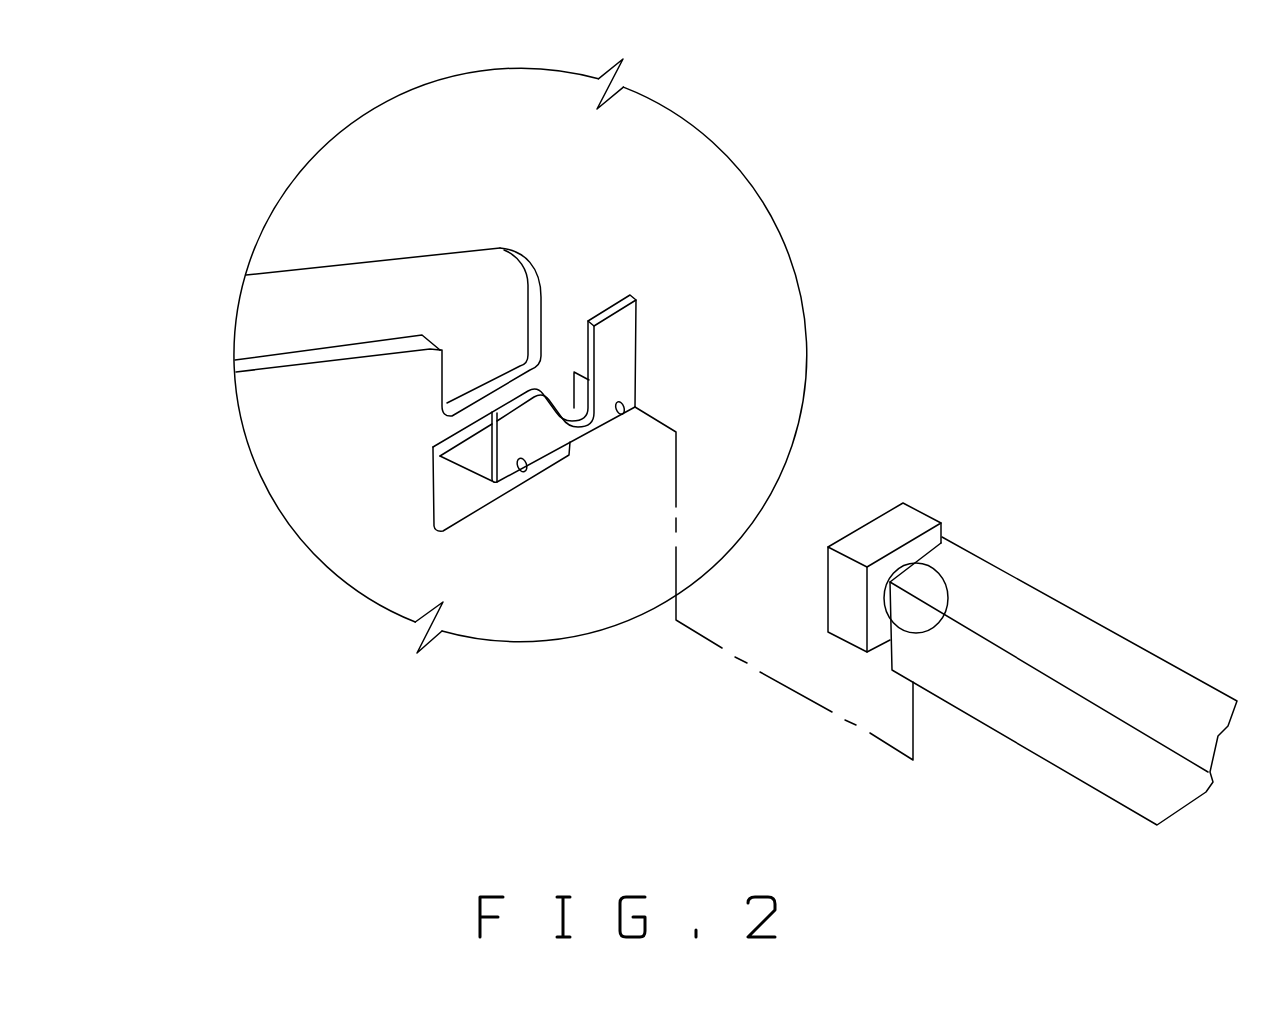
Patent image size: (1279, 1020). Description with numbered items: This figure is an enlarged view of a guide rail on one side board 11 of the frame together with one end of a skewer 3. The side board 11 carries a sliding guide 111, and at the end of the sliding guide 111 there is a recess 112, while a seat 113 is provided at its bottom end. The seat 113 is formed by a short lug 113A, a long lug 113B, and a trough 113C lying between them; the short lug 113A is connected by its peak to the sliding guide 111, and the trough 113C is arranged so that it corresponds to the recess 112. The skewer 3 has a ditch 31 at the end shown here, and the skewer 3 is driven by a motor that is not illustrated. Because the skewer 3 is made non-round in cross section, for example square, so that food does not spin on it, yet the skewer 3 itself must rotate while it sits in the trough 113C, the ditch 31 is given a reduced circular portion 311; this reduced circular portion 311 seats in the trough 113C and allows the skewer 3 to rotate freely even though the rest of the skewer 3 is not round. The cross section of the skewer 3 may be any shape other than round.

The side board 11 is at (662, 157).
The sliding guide 111 is at (363, 280).
The recess 112 is at (482, 355).
The seat 113 is at (731, 342).
The short lug 113A is at (533, 427).
The long lug 113B is at (637, 380).
The trough 113C is at (573, 386).
The skewer 3 is at (1039, 649).
The ditch 31 is at (969, 562).
The reduced circular portion 311 is at (952, 539).